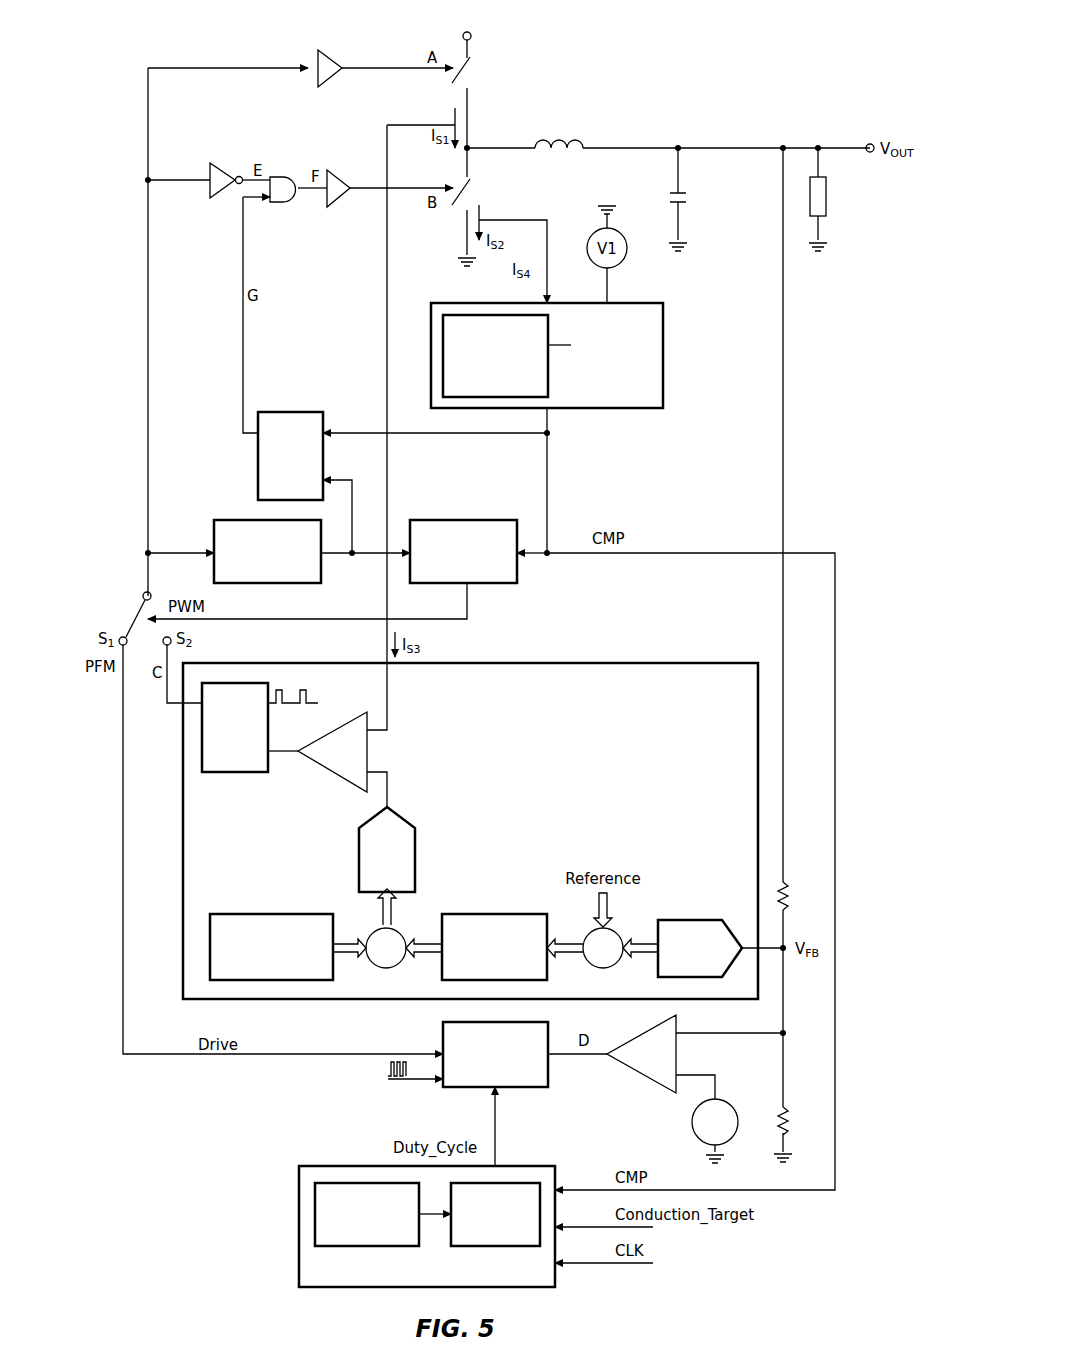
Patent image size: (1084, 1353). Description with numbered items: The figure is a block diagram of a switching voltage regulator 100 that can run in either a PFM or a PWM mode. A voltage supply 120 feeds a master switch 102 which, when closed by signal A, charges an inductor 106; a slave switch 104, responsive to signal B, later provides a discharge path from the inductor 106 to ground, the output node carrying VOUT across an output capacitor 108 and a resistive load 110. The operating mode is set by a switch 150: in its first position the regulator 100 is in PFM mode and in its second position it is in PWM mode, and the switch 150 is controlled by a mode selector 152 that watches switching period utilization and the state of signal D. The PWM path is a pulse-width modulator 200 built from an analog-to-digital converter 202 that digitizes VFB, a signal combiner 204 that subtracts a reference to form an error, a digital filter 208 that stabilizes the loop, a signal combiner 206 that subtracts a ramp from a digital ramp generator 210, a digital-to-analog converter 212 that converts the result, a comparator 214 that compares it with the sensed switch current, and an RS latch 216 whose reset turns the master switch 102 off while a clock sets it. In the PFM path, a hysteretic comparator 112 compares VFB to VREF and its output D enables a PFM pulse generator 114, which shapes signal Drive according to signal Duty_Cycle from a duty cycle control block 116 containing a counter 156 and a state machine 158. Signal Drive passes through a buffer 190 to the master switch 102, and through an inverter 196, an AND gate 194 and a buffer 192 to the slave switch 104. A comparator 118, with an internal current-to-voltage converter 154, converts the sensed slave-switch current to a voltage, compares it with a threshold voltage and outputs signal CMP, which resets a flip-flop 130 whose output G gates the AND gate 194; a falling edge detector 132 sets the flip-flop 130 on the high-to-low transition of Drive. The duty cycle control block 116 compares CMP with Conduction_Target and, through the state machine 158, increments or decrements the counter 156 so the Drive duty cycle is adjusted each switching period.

The regulator 100 is at (870, 55).
The master switch 102 is at (470, 70).
The slave switch 104 is at (470, 192).
The inductor 106 is at (565, 142).
The output capacitor 108 is at (690, 200).
The resistive load 110 is at (830, 200).
The comparator 112 is at (645, 1075).
The PFM pulse generator 114 is at (441, 1042).
The duty cycle control block 116 is at (355, 1165).
The comparator 118 is at (665, 355).
The voltage supply 120 is at (472, 38).
The flip-flop 130 is at (290, 411).
The falling edge detector 132 is at (240, 519).
The switch 150 is at (130, 623).
The mode selector 152 is at (468, 519).
The current-to-voltage converter 154 is at (430, 355).
The counter 156 is at (527, 1182).
The state machine 158 is at (314, 1214).
The buffer 190 is at (333, 52).
The buffer 192 is at (338, 171).
The AND gate 194 is at (283, 176).
The inverter 196 is at (225, 165).
The pulse-width modulator 200 is at (599, 662).
The analog-to-digital converter 202 is at (692, 920).
The signal combiner 204 is at (618, 926).
The signal combiner 206 is at (400, 930).
The digital filter 208 is at (492, 913).
The digital ramp generator 210 is at (270, 913).
The digital-to-analog converter 212 is at (400, 818).
The comparator 214 is at (330, 772).
The RS latch 216 is at (233, 773).